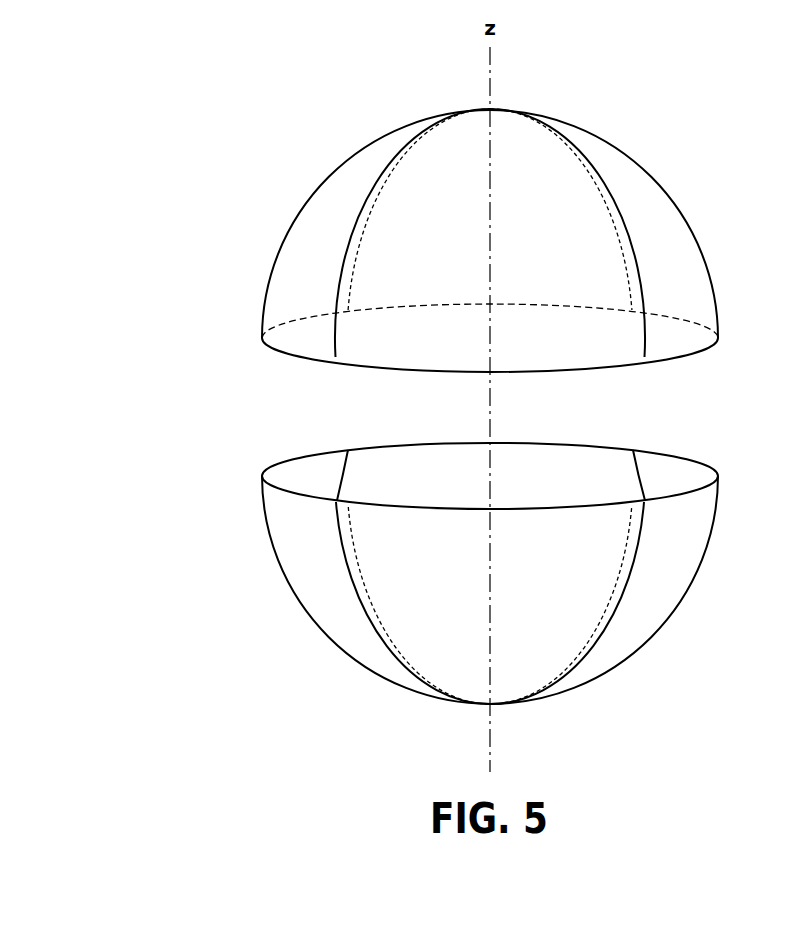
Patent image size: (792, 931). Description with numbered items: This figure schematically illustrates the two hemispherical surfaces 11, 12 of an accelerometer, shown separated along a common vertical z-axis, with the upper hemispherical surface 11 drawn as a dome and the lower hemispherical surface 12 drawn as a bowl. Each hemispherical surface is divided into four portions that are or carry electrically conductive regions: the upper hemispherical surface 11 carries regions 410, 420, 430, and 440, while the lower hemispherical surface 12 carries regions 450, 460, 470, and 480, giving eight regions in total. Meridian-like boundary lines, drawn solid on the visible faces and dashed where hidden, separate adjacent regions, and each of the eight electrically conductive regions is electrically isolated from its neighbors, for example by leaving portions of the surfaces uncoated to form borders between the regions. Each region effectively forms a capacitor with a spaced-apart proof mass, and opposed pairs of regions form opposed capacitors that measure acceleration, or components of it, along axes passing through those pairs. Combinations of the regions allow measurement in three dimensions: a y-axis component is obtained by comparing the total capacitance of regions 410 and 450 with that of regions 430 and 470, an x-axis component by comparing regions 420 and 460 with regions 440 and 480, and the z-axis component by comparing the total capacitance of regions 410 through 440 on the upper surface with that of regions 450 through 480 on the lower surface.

The hemispherical surface 11 is at (490, 223).
The hemispherical surface 12 is at (473, 576).
The electrically conductive region 410 is at (573, 352).
The electrically conductive region 420 is at (300, 215).
The electrically conductive region 430 is at (540, 148).
The electrically conductive region 440 is at (695, 235).
The electrically conductive region 450 is at (572, 615).
The electrically conductive region 460 is at (275, 557).
The electrically conductive region 470 is at (405, 470).
The electrically conductive region 480 is at (692, 585).